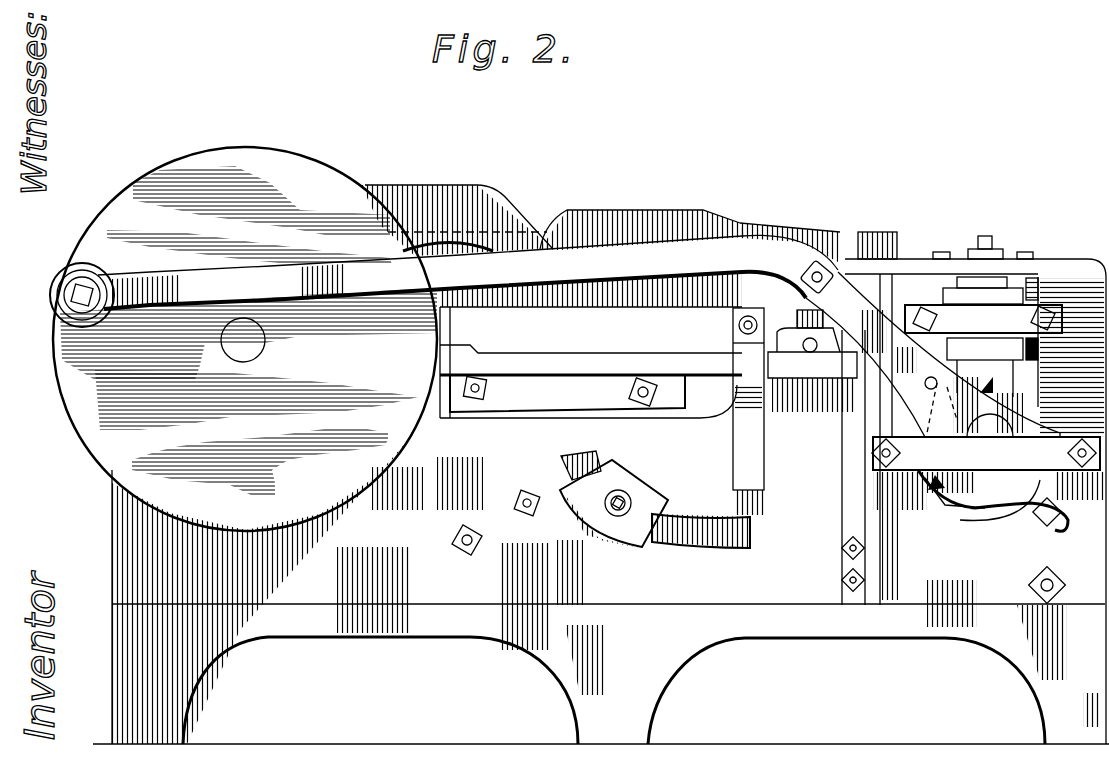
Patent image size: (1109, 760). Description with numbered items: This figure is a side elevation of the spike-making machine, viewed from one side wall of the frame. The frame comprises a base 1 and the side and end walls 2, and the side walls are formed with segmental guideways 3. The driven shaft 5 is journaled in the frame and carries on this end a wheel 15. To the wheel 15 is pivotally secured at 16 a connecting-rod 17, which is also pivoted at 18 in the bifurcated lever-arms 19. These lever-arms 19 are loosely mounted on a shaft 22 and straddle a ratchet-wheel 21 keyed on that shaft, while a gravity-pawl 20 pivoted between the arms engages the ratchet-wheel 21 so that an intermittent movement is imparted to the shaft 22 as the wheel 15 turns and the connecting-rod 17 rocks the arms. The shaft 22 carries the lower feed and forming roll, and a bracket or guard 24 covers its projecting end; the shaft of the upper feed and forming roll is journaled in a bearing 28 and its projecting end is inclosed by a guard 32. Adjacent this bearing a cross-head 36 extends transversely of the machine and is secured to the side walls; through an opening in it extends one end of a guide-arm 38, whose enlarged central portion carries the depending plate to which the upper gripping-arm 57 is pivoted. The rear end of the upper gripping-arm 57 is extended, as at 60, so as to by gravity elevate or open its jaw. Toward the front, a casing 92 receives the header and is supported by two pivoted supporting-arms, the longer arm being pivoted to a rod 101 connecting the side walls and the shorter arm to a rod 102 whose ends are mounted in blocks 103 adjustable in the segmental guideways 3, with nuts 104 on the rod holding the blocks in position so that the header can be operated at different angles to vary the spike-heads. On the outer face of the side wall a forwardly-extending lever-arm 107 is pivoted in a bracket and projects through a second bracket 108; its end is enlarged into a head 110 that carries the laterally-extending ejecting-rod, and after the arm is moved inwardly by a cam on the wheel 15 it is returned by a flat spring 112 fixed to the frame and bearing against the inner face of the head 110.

The base 1 is at (601, 662).
The side and end walls 2 is at (609, 501).
The segmental guideways 3 is at (718, 540).
The driven shaft 5 is at (252, 347).
The wheel 15 is at (245, 339).
The pivot 16 is at (74, 294).
The connecting-rod 17 is at (665, 258).
The pivot 18 is at (821, 266).
The bifurcated lever-arms 19 is at (882, 322).
The gravity-pawl 20 is at (926, 388).
The ratchet-wheel 21 is at (1000, 541).
The shaft 22 is at (955, 506).
The bracket or guard 24 is at (986, 453).
The bearing 28 is at (985, 297).
The guard 32 is at (983, 319).
The cross-head 36 is at (872, 236).
The guide-arm 38 is at (583, 216).
The upper gripping-arm 57 is at (757, 252).
The extension 60 is at (412, 197).
The casing 92 is at (549, 396).
The rod 101 is at (469, 553).
The rod 102 is at (616, 516).
The blocks 103 is at (583, 462).
The nuts 104 is at (625, 500).
The lever-arm 107 is at (600, 362).
The bracket 108 is at (752, 458).
The head 110 is at (816, 368).
The flat spring 112 is at (850, 496).